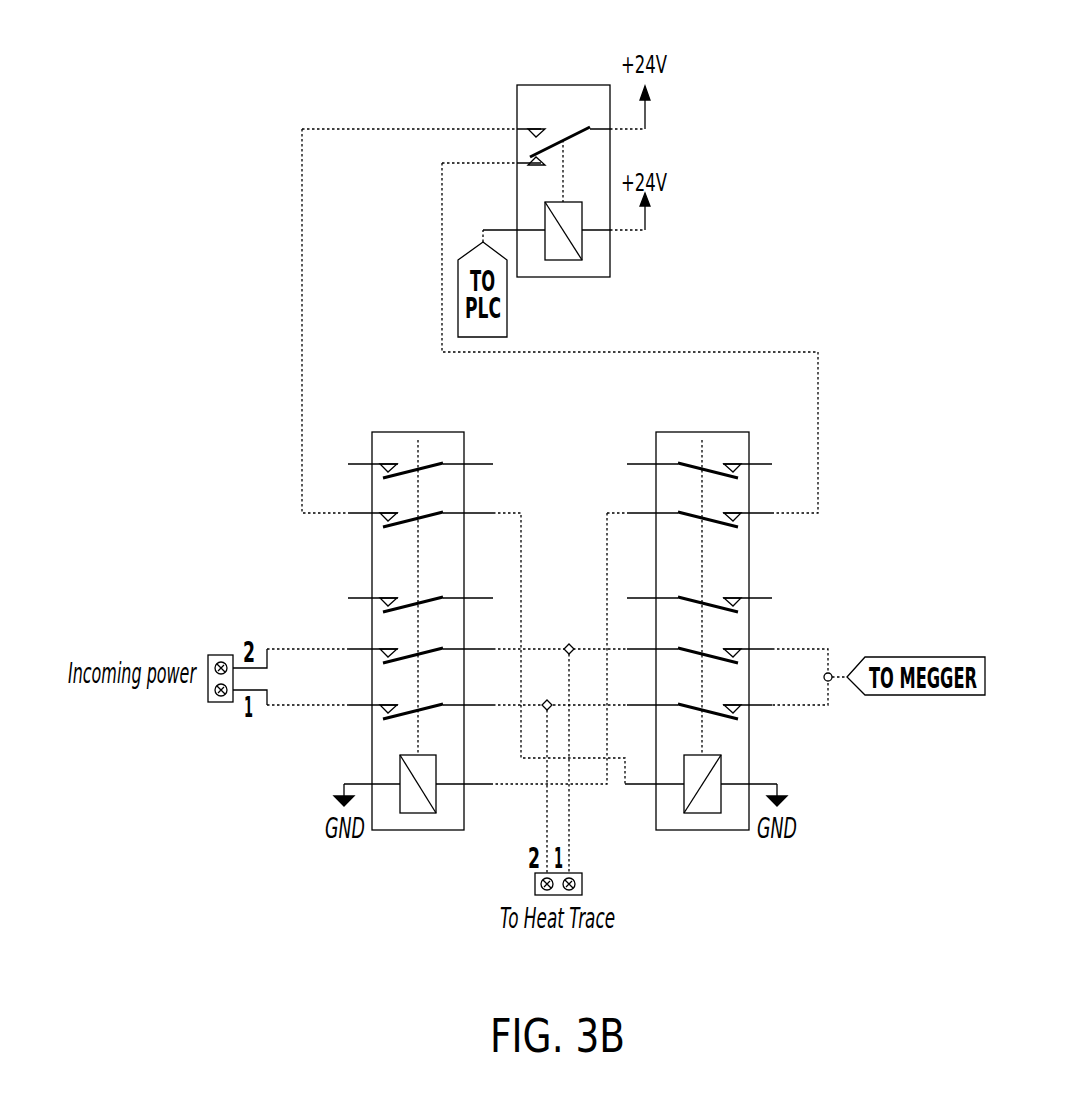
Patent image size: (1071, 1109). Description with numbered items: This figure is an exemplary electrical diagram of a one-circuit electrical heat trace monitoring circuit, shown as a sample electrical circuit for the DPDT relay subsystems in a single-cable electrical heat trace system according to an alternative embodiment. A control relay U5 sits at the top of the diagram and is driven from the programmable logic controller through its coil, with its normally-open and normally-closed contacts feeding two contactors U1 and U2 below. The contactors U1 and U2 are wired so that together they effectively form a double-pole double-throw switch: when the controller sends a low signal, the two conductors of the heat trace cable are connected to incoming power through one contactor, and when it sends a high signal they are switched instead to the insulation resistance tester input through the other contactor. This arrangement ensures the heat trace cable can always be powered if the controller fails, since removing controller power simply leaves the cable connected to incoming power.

The contactor Ex9C40 U1 is at (419, 598).
The contactor Ex9C40 U2 is at (701, 598).
The control relay U5 is at (561, 143).